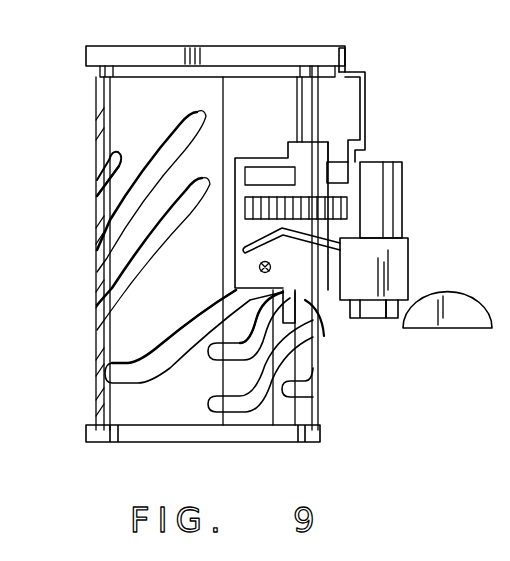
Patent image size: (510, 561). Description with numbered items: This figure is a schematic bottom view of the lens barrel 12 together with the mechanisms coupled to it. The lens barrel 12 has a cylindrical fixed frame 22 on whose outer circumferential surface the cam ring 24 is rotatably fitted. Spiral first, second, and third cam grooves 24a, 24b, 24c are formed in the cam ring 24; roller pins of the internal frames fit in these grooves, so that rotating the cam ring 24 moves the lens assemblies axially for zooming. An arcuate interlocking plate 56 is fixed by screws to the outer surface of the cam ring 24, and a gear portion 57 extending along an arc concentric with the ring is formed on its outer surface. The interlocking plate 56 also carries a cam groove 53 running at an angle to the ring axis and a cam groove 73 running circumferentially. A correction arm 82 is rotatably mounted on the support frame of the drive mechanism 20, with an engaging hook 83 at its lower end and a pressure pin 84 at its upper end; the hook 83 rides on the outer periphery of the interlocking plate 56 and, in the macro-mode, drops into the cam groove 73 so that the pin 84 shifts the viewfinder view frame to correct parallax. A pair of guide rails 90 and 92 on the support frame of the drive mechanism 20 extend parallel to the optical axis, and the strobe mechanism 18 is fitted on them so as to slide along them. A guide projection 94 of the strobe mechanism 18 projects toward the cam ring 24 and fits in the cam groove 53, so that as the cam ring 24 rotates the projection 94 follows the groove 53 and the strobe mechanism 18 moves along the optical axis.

The lens barrel 12 is at (92, 230).
The strobe mechanism 18 is at (402, 253).
The drive mechanism 20 is at (405, 178).
The fixed frame 22 is at (170, 435).
The cam ring 24 is at (107, 398).
The first cam groove 24a is at (95, 260).
The second cam groove 24b is at (95, 322).
The third cam groove 24c is at (97, 182).
The cam groove 53 is at (293, 300).
The interlocking plate 56 is at (318, 305).
The gear portion 57 is at (315, 214).
The cam groove 73 is at (263, 173).
The correction arm 82 is at (363, 100).
The engaging hook 83 is at (337, 177).
The pressure pin 84 is at (345, 63).
The guide rail 90 is at (355, 312).
The guide rail 92 is at (393, 322).
The guide projection 94 is at (340, 265).